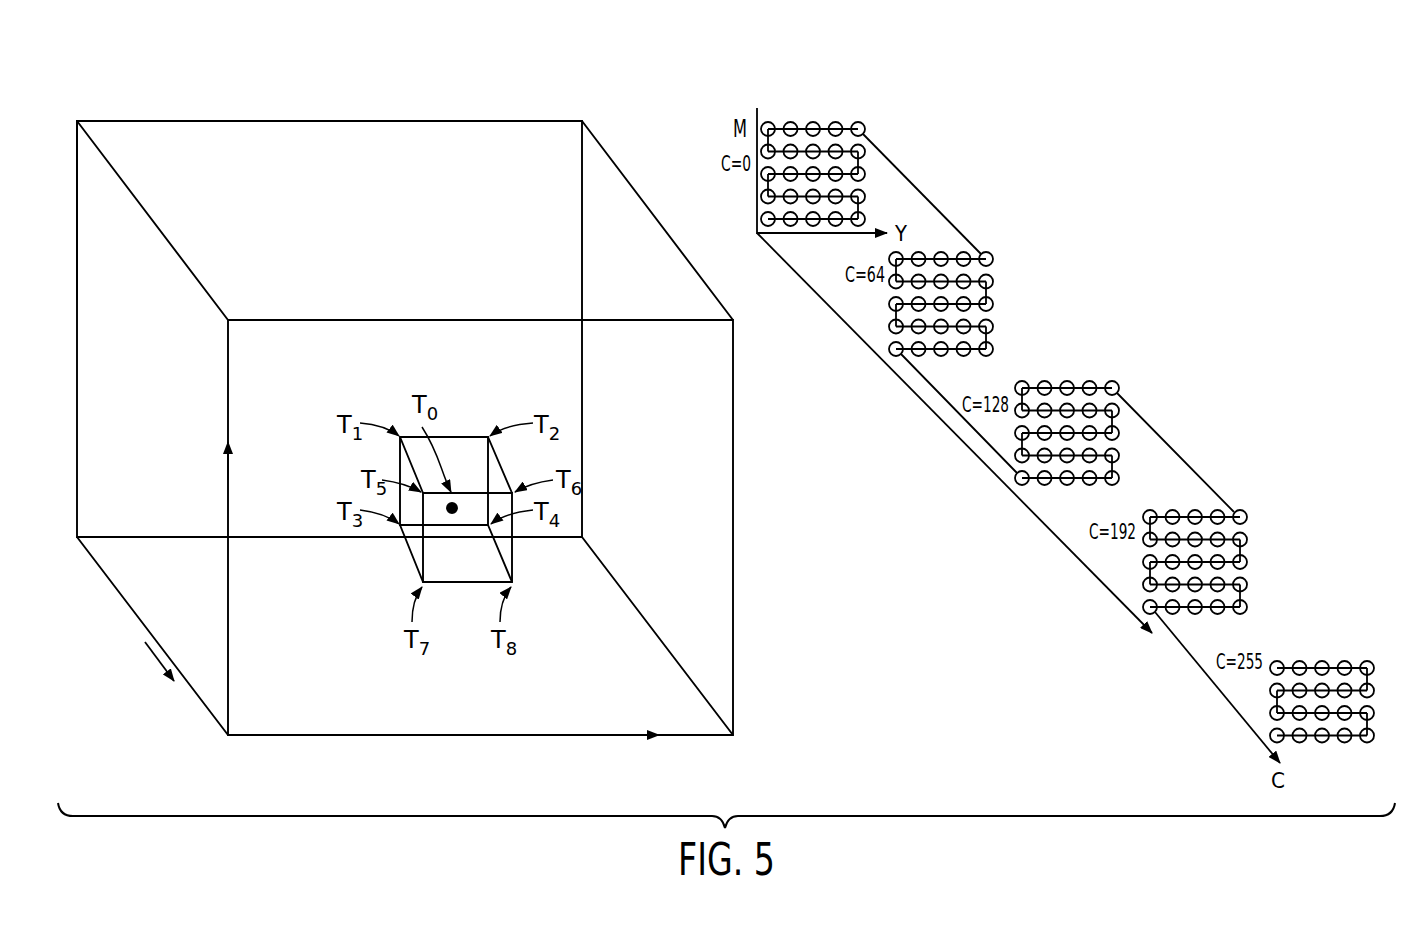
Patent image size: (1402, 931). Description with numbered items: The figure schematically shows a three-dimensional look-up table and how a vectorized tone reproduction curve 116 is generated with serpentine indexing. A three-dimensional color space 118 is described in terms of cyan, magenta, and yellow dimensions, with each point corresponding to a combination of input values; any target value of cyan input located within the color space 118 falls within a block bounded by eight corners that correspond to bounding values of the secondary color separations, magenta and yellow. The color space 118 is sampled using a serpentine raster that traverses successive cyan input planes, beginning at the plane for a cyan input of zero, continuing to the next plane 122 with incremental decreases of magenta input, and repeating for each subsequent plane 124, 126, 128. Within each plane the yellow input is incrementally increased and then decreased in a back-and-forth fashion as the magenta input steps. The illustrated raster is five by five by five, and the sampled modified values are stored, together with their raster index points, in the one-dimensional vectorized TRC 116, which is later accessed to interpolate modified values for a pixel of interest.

The vectorized tone reproduction curve 116 is at (928, 168).
The three-dimensional color space 118 is at (360, 120).
The C31 plane 122 is at (997, 240).
The successive plane of the color space 124 is at (1124, 370).
The successive plane of the color space 126 is at (1250, 498).
The successive plane of the color space 128 is at (1379, 630).